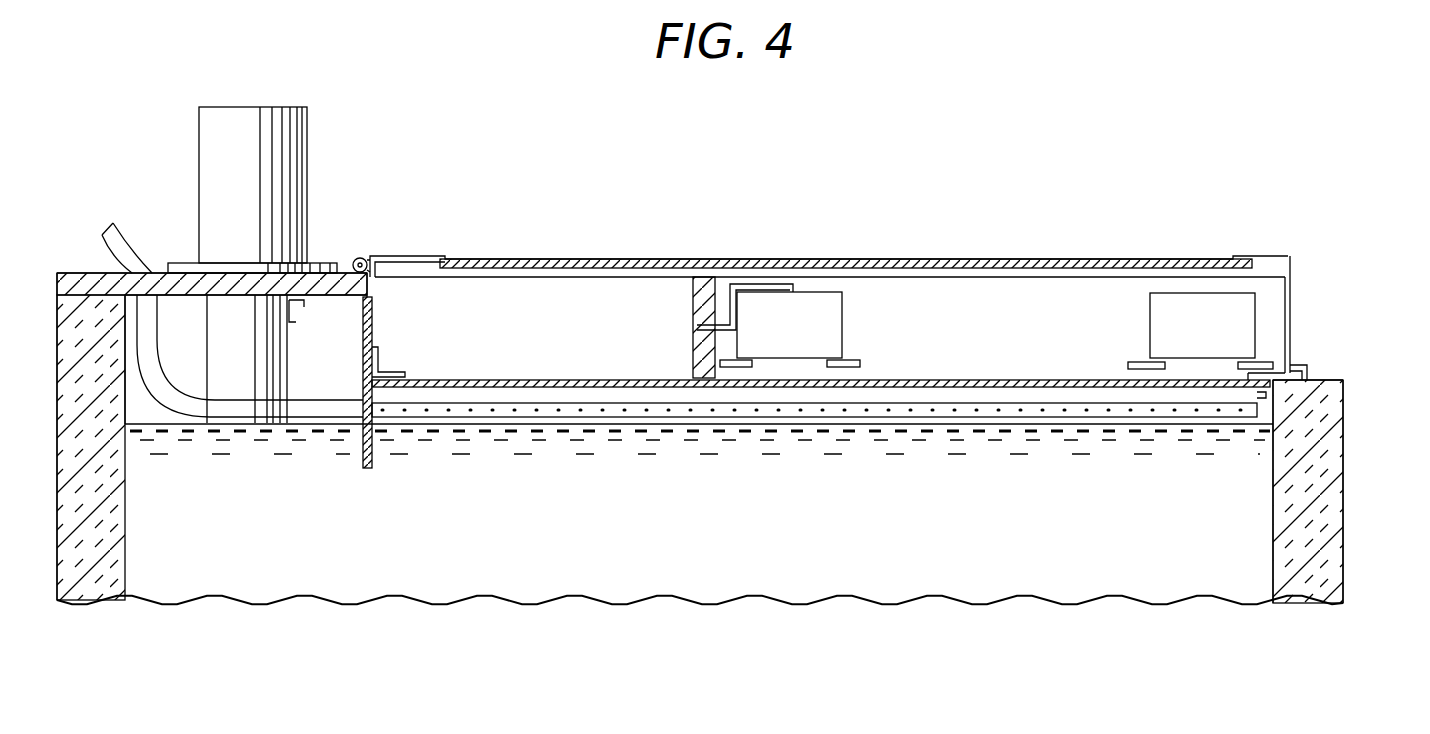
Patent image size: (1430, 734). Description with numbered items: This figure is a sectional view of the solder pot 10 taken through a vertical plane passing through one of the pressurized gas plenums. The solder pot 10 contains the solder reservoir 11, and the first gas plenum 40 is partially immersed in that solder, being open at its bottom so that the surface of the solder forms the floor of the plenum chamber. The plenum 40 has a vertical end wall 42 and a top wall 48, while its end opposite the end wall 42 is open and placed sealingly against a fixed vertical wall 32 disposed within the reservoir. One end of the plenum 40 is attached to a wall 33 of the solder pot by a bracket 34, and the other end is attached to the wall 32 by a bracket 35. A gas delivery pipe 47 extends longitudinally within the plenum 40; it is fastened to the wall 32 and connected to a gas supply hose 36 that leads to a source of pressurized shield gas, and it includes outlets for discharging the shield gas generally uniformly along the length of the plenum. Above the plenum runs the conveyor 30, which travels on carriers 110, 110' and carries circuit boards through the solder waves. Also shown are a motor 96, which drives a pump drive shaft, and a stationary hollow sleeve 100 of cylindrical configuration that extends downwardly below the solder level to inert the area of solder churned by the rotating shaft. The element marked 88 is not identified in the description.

The solder pot 10 is at (1352, 472).
The solder reservoir 11 is at (1085, 583).
The conveyor 30 is at (1258, 362).
The fixed vertical wall 32 is at (373, 460).
The wall of the solder pot 33 is at (1327, 545).
The bracket 34 is at (1288, 365).
The bracket 35 is at (380, 358).
The gas supply hose 36 is at (135, 243).
The first gas plenum 40 is at (1036, 376).
The vertical end wall 42 is at (1266, 396).
The gas delivery pipe 47 is at (910, 417).
The top wall 48 is at (970, 380).
The lid 88 is at (920, 260).
The motor 96 is at (314, 146).
The stationary hollow sleeve 100 is at (300, 316).
The carrier 110 is at (778, 285).
The carrier 110' is at (1200, 285).